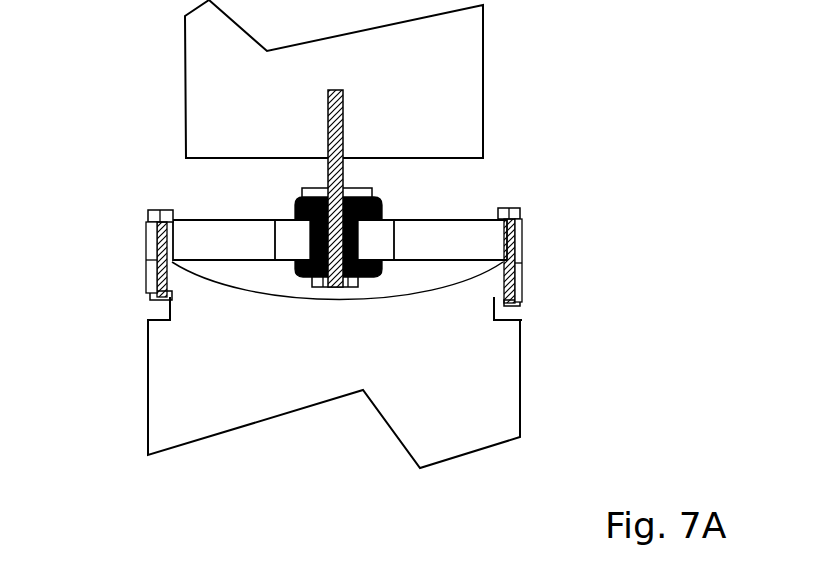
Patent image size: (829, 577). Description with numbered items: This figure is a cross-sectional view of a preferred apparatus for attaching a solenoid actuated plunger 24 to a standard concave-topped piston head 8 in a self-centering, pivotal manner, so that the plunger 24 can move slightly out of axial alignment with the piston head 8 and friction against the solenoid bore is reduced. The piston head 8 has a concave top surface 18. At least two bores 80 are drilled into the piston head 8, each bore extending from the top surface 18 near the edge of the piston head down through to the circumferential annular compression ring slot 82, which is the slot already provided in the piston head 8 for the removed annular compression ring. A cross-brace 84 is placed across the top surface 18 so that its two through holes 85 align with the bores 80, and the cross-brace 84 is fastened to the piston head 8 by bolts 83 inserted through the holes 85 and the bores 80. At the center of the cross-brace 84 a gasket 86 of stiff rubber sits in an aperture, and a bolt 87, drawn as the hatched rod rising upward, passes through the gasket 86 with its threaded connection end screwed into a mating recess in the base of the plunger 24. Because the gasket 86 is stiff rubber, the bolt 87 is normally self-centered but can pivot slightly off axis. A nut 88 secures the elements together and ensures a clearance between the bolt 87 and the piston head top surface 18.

The plunger 24 is at (467, 52).
The piston head 8 is at (482, 430).
The cross-brace 84 is at (440, 230).
The concave top surface 18 is at (413, 296).
The gasket 86 is at (382, 204).
The nut 88 is at (364, 190).
The bolt 87 is at (332, 287).
The bolts 83 is at (157, 215).
The bores 80 is at (145, 278).
The through holes 85 is at (145, 233).
The circumferential annular compression ring slot 82 is at (136, 307).
The threaded rod is at (335, 188).